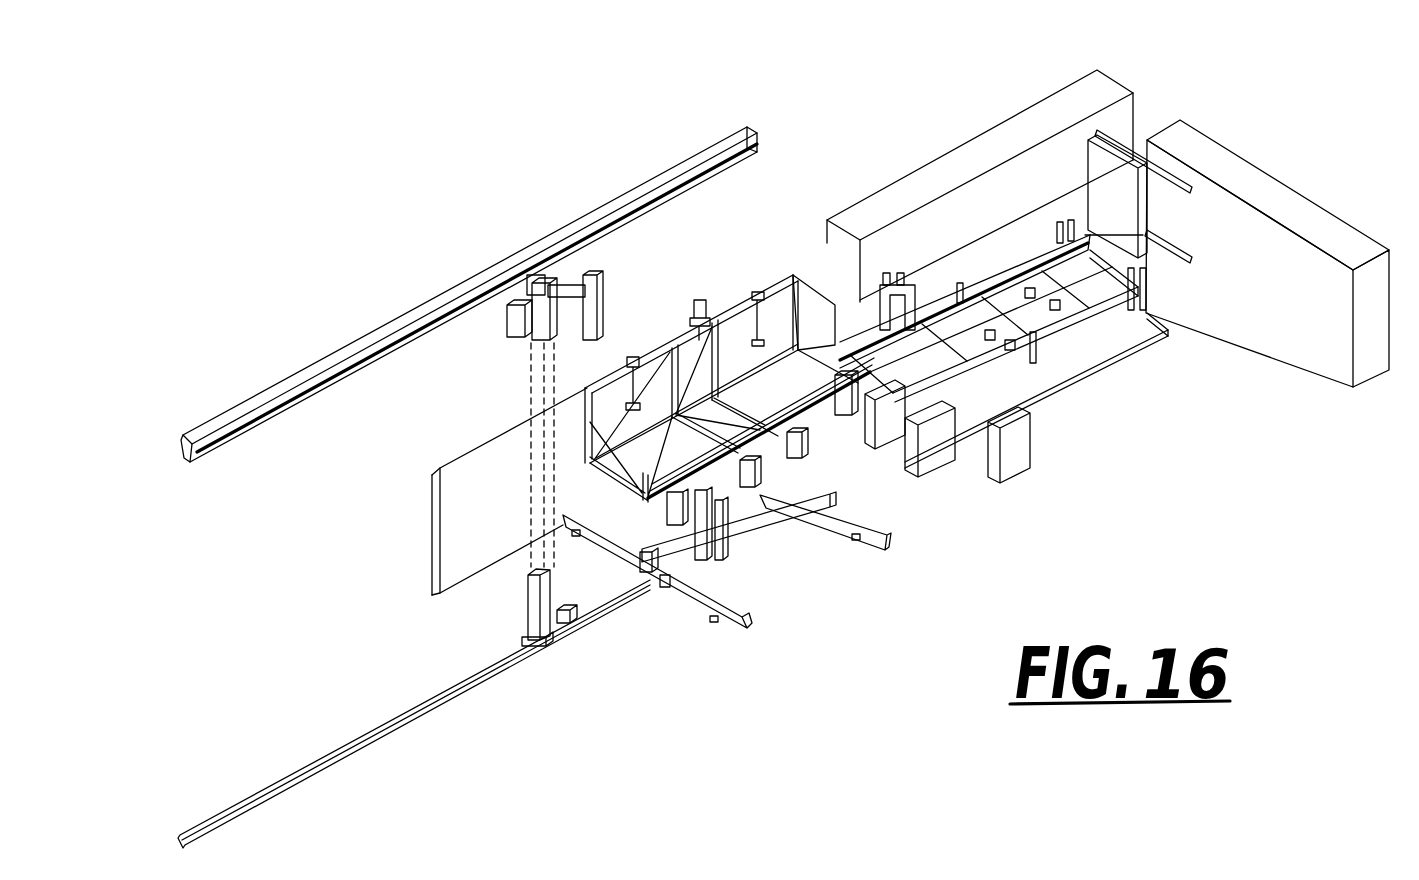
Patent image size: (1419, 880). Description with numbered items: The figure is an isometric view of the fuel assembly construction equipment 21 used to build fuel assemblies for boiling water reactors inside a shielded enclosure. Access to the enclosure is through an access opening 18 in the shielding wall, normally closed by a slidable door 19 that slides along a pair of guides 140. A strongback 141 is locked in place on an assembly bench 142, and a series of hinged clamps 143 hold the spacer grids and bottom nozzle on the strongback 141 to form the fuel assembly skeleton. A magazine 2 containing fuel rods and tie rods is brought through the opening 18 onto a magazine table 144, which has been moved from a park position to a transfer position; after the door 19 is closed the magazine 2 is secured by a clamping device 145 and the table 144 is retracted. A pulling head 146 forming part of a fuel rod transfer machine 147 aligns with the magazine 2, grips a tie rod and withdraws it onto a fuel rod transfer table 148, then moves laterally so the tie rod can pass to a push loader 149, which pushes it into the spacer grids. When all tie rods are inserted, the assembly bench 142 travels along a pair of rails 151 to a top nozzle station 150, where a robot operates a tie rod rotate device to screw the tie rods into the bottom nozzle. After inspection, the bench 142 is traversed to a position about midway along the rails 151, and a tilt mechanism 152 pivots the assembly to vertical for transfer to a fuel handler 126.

The magazine 2 is at (998, 232).
The access opening 18 is at (1147, 125).
The slidable door 19 is at (1097, 158).
The fuel assembly construction equipment 21 is at (1072, 420).
The fuel handler 126 is at (563, 213).
The guides 140 is at (1183, 240).
The strongback 141 is at (908, 427).
The assembly bench 142 is at (767, 523).
The hinged clamps 143 is at (897, 417).
The magazine table 144 is at (1040, 247).
The clamping device 145 is at (912, 282).
The pulling head 146 is at (642, 490).
The fuel rod transfer machine 147 is at (725, 307).
The fuel rod transfer table 148 is at (613, 480).
The push loader 149 is at (1085, 327).
The top nozzle station 150 is at (997, 483).
The rails 151 is at (727, 620).
The tilt mechanism 152 is at (710, 547).